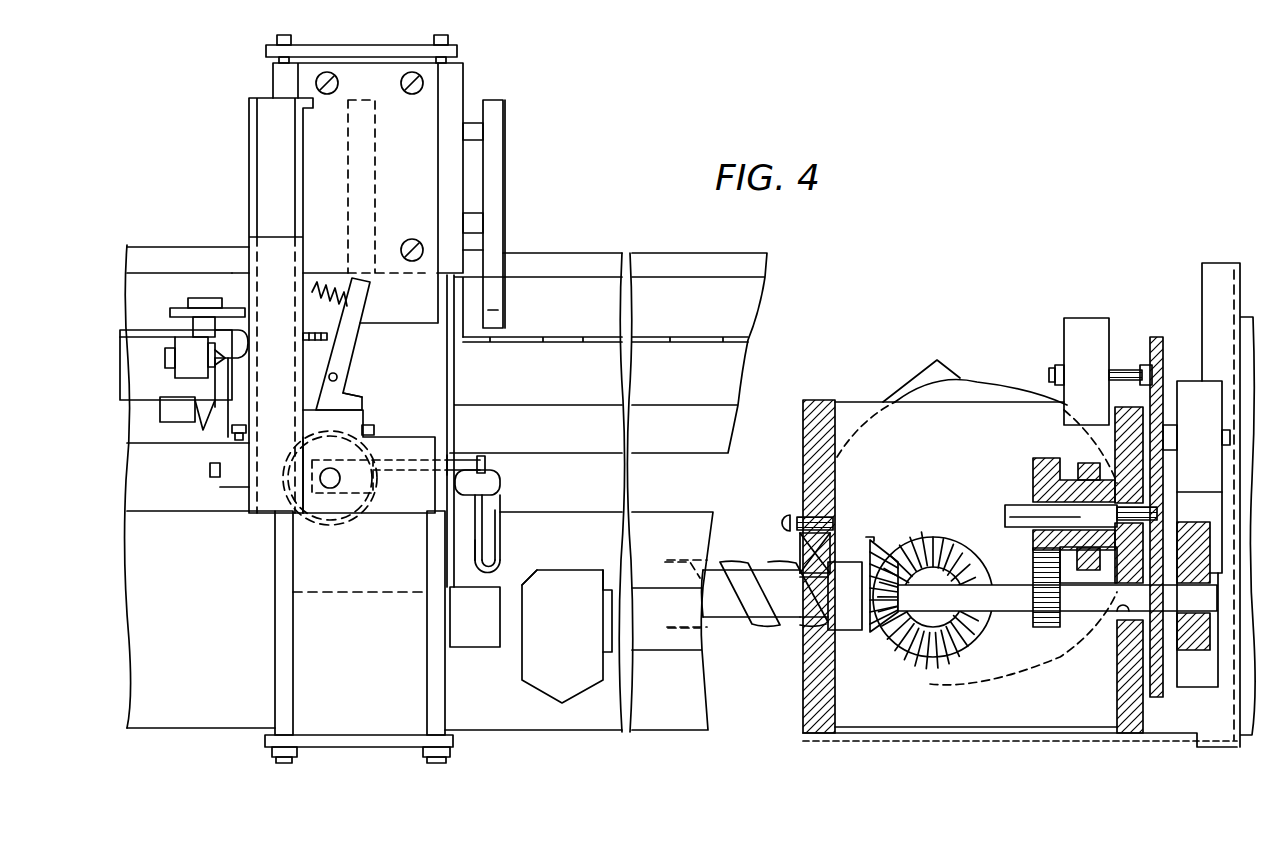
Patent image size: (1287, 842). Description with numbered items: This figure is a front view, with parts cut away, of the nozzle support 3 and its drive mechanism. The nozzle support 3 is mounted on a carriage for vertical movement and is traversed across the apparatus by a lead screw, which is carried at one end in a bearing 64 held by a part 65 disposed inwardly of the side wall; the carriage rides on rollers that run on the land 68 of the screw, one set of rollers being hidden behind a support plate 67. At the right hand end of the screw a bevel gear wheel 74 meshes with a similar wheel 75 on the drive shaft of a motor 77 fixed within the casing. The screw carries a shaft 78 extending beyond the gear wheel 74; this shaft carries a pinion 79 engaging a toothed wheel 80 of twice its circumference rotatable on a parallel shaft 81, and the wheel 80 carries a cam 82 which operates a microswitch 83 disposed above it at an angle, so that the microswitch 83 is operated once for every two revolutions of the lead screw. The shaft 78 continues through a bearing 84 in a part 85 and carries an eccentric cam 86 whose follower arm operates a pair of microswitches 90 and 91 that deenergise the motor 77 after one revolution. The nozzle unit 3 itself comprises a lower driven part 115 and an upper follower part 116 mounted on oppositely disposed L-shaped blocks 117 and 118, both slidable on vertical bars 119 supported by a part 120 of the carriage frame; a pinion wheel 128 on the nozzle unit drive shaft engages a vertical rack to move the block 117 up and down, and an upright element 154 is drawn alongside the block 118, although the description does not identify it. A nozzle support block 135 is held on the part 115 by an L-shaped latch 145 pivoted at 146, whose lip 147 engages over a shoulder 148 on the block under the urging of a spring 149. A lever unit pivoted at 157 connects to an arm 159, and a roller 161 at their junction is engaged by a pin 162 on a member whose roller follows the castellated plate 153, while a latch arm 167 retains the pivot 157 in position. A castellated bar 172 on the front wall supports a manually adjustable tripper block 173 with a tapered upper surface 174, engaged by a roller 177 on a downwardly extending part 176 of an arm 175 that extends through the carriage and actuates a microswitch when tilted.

The nozzle support 3 is at (521, 239).
The bearing 64 is at (803, 656).
The part 65 is at (817, 413).
The support plate 67 is at (458, 458).
The land 68 is at (750, 568).
The bevel gear wheel 74 is at (874, 536).
The bevel gear wheel 75 is at (921, 550).
The motor 77 is at (986, 388).
The shaft 78 is at (1015, 613).
The pinion 79 is at (1033, 563).
The toothed wheel 80 is at (1033, 468).
The shaft 81 is at (1008, 513).
The cam 82 is at (1100, 466).
The microswitch 83 is at (1081, 319).
The bearing 84 is at (1117, 591).
The part 85 is at (1132, 684).
The cam 86 is at (1195, 680).
The microswitch 90 is at (1190, 393).
The microswitch 91 is at (1205, 500).
The lower driven part 115 is at (255, 527).
The upper follower part 116 is at (238, 160).
The L-shaped block 117 is at (427, 316).
The L-shaped block 118 is at (424, 143).
The vertical bars 119 is at (277, 638).
The part of carriage frame 120 is at (383, 741).
The pinion wheel 128 is at (330, 526).
The nozzle support block 135 is at (415, 514).
The latch 145 is at (352, 308).
The pivot 146 is at (340, 372).
The lip 147 is at (376, 404).
The shoulder 148 is at (373, 430).
The spring 149 is at (329, 285).
The castellated plate 153 is at (574, 337).
The rod 154 is at (497, 183).
The pivot 157 is at (238, 408).
The arm 159 is at (237, 477).
The roller 161 is at (187, 347).
The pin 162 is at (195, 378).
The arm 167 is at (245, 300).
The castellated bar 172 is at (491, 640).
The tripper block 173 is at (540, 682).
The tapered upper surface 174 is at (525, 582).
The arm 175 is at (482, 466).
The downwardly extending part 176 is at (492, 497).
The roller 177 is at (505, 551).